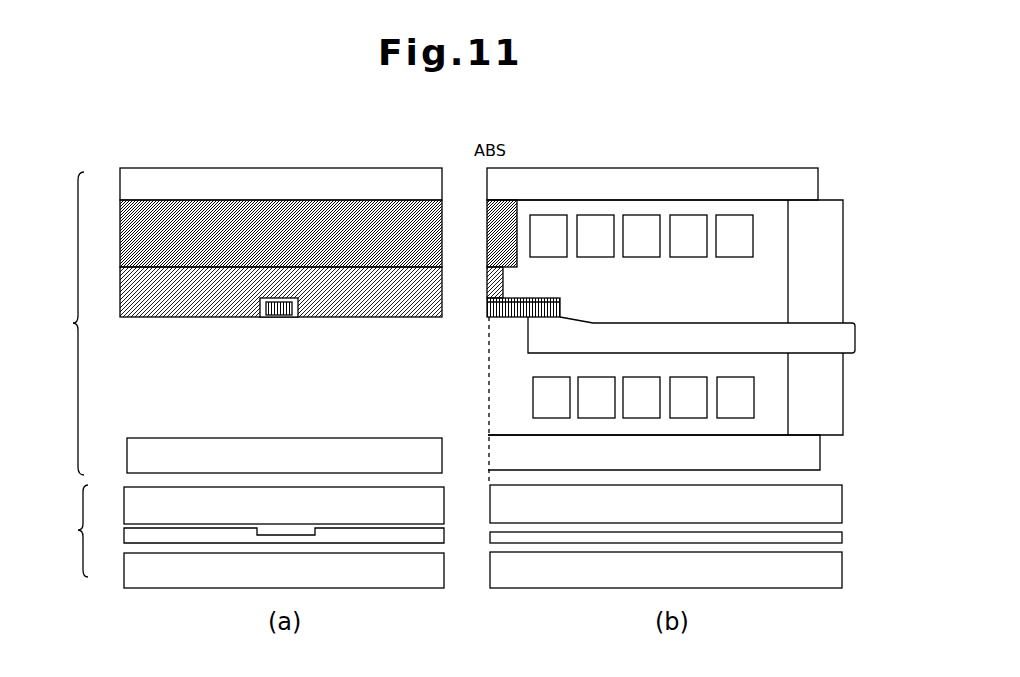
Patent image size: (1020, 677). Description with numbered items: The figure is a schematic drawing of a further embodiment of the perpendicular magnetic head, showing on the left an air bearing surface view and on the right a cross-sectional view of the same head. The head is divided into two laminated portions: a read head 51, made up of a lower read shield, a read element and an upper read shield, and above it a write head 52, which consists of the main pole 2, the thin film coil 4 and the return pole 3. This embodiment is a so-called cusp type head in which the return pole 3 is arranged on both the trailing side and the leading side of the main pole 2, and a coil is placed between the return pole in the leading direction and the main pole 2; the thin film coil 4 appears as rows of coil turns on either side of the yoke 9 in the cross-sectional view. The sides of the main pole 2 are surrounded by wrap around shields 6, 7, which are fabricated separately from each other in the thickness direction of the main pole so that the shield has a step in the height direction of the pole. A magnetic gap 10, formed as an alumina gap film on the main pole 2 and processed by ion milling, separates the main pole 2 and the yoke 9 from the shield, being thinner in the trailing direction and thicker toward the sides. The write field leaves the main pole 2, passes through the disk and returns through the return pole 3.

The main pole 2 is at (283, 318).
The return pole 3 is at (290, 181).
The thin film coil 4 is at (737, 246).
The wrap around shield 6 is at (130, 290).
The wrap around shield 7 is at (130, 226).
The yoke 9 is at (737, 334).
The magnetic gap 10 is at (262, 318).
The read head 51 is at (444, 536).
The write head 52 is at (65, 323).